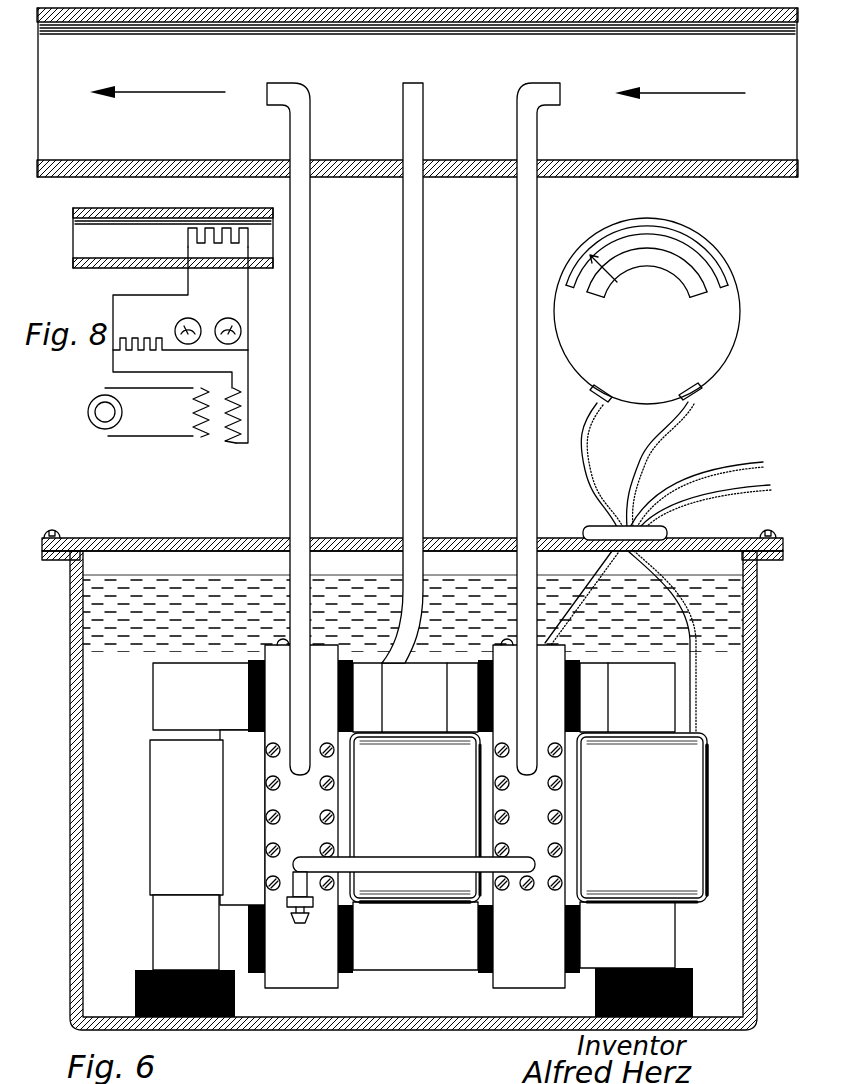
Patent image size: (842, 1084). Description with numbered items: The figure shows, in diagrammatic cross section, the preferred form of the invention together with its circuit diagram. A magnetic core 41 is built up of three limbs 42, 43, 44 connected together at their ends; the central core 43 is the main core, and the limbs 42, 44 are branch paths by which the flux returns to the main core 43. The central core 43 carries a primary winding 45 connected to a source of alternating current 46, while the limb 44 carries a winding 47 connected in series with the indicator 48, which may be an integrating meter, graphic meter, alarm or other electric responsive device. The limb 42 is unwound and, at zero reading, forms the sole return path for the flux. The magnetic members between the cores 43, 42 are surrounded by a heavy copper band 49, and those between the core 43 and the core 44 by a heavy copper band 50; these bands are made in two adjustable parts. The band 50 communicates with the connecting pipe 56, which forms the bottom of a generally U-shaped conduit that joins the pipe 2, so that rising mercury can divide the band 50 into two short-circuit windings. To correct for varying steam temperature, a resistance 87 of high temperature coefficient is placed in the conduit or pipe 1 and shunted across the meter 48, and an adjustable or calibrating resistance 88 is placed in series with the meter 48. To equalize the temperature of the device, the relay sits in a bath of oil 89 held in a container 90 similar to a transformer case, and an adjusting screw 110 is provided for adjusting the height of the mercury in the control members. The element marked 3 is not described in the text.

In FIG. 6, the conduit or pipe 1 is at (463, 128).
In FIG. 8, the conduit or pipe 1 is at (100, 238).
In FIG. 6, the pipe 2 is at (525, 105).
In FIG. 6, the discharge tube 3 is at (296, 120).
In FIG. 6, the magnetic core 41 is at (165, 678).
In FIG. 6, the limb 42 is at (163, 748).
In FIG. 6, the central core 43 is at (427, 710).
In FIG. 6, the limb 44 is at (652, 715).
In FIG. 6, the primary winding 45 is at (405, 882).
In FIG. 8, the primary winding 45 is at (197, 438).
In FIG. 8, the source of alternating current 46 is at (103, 418).
In FIG. 6, the winding 47 is at (672, 817).
In FIG. 8, the winding 47 is at (227, 441).
In FIG. 6, the indicator 48 is at (697, 353).
In FIG. 8, the indicator 48 is at (280, 326).
In FIG. 6, the heavy copper band 49 is at (310, 975).
In FIG. 6, the heavy copper band 50 is at (510, 950).
In FIG. 6, the connecting pipe 56 is at (453, 866).
In FIG. 8, the resistance 87 is at (240, 237).
In FIG. 8, the adjustable or calibrating resistance 88 is at (145, 336).
In FIG. 6, the bath of oil 89 is at (705, 600).
In FIG. 6, the container 90 is at (76, 607).
In FIG. 6, the adjusting screw 110 is at (303, 923).